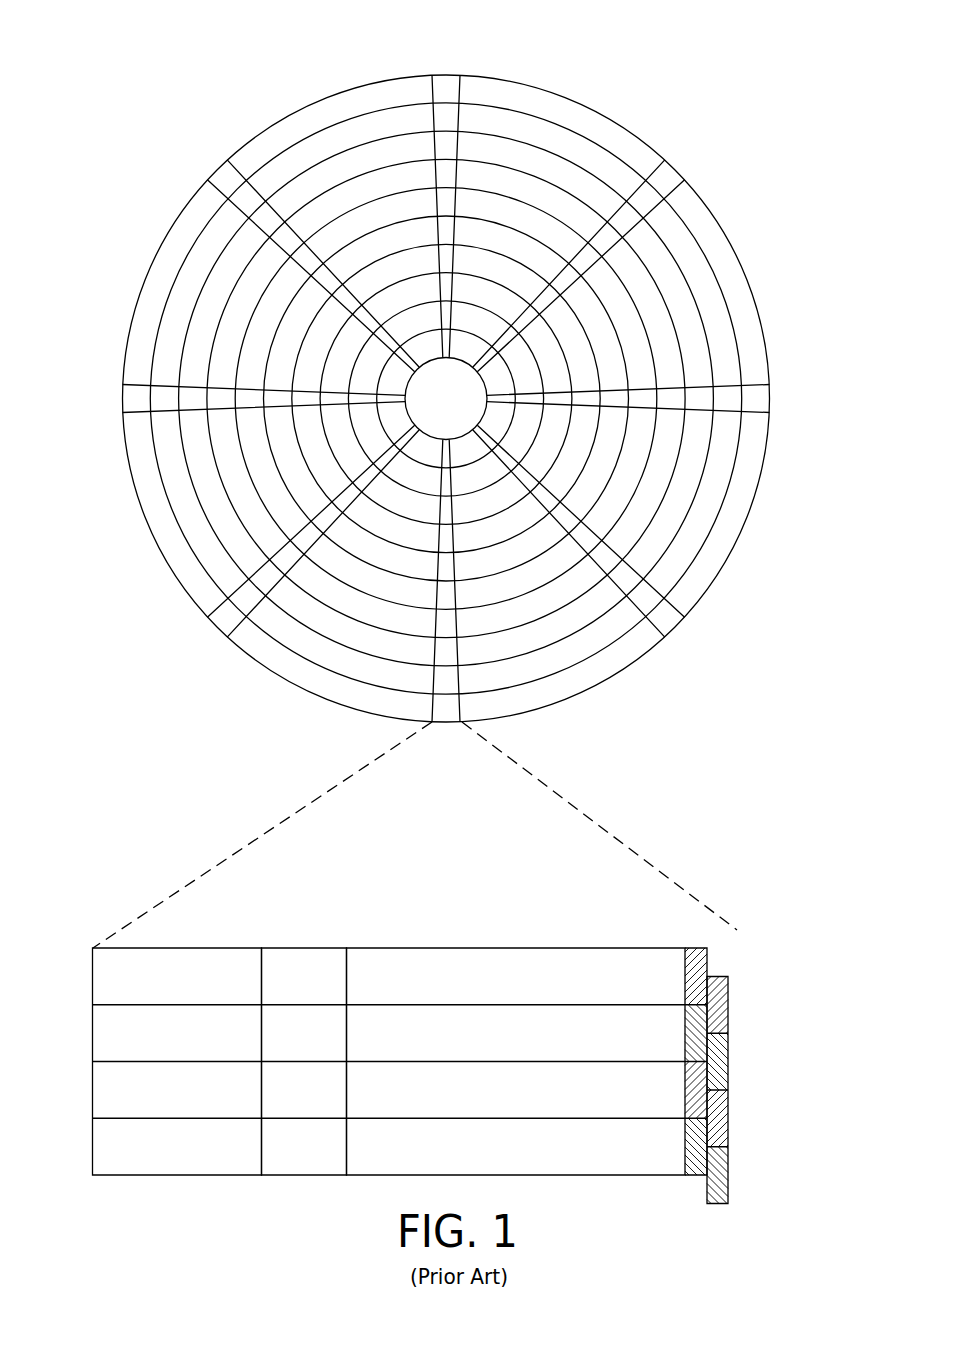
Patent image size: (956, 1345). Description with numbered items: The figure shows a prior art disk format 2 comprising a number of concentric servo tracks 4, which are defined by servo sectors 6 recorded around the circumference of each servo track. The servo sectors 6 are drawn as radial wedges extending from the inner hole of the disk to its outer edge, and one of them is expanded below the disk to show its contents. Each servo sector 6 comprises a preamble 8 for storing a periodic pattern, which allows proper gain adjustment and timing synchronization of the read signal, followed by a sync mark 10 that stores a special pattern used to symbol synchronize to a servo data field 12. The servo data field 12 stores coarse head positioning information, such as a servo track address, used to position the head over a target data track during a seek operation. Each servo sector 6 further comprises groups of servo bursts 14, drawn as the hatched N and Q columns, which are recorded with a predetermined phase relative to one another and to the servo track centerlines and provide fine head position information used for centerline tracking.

The disk format 2 is at (196, 72).
The servo tracks 4 is at (556, 140).
The servo sectors 6 is at (446, 85).
The preamble 8 is at (186, 948).
The sync mark 10 is at (307, 948).
The servo data field 12 is at (506, 948).
The servo bursts 14 is at (731, 942).